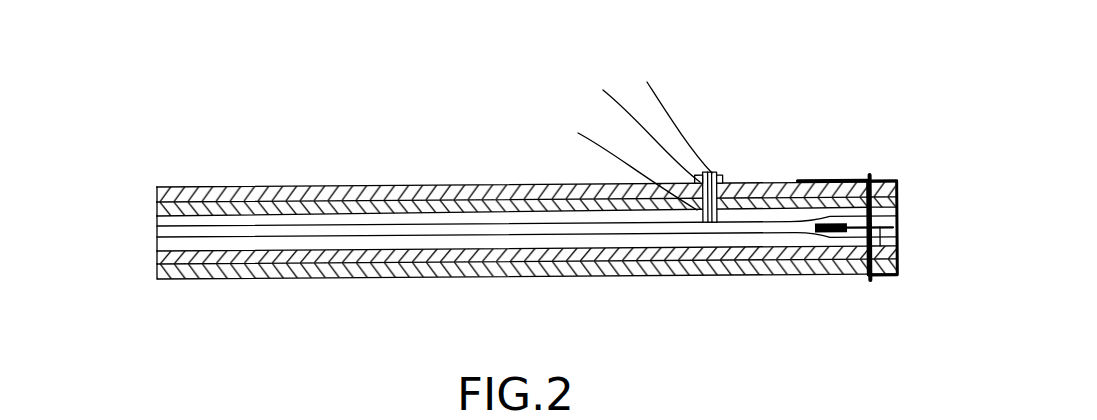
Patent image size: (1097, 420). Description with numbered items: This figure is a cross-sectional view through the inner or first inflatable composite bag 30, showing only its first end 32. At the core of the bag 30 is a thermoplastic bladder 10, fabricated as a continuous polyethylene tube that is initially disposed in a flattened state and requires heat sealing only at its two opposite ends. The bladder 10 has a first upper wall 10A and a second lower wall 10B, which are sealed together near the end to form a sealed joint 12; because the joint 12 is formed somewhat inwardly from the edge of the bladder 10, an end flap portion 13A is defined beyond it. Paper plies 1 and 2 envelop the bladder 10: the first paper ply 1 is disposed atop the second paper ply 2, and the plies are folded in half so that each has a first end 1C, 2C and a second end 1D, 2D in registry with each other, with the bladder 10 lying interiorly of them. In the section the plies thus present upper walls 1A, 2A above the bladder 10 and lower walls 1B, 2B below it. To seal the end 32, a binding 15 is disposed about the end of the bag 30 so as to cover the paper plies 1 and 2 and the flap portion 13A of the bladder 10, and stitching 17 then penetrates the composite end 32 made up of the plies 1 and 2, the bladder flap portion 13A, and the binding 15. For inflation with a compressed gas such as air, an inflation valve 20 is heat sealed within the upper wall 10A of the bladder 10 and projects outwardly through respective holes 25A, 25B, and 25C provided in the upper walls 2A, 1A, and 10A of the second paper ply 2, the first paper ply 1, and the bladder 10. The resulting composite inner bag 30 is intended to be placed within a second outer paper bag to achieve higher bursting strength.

The first paper ply 1 is at (157, 207).
The second paper ply 2 is at (157, 191).
The thermoplastic bladder 10 is at (157, 238).
The upper wall of first paper ply 1A is at (282, 207).
The upper wall of second paper ply 2A is at (220, 193).
The first upper wall of bladder 10A is at (385, 227).
The lower wall of first paper ply 1B is at (310, 268).
The lower wall of second paper ply 2B is at (218, 273).
The second lower wall of bladder 10B is at (402, 240).
The first end of first paper ply 1C is at (895, 202).
The first end of second paper ply 2C is at (902, 183).
The second end of first paper ply 1D is at (898, 250).
The second end of second paper ply 2D is at (900, 271).
The sealed joint 12 is at (819, 233).
The end flap portion 13A is at (880, 276).
The binding material 15 is at (816, 179).
The stitching 17 is at (869, 176).
The inflation valve 20 is at (711, 172).
The hole in upper wall of second paper ply 25A is at (670, 112).
The hole in upper wall of first paper ply 25B is at (631, 121).
The hole in upper wall of bladder 25C is at (609, 160).
The inner inflatable bag 30 is at (467, 160).
The first end of bag 32 is at (895, 166).